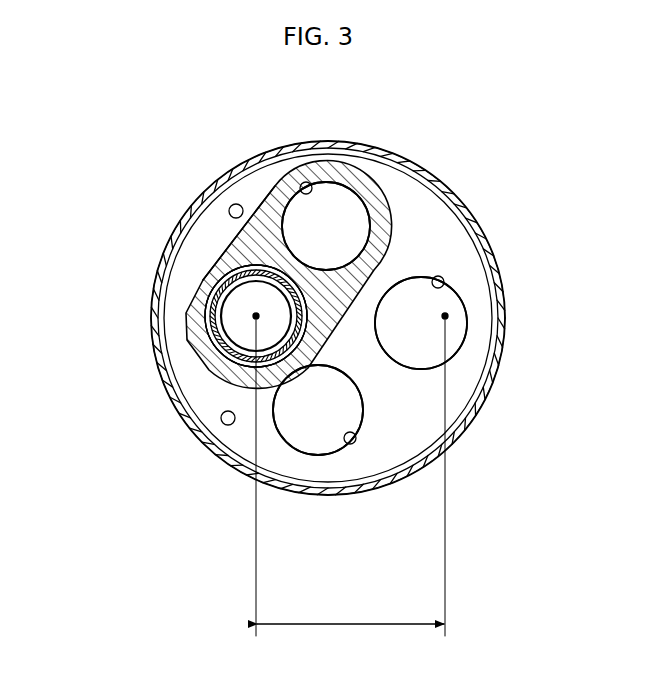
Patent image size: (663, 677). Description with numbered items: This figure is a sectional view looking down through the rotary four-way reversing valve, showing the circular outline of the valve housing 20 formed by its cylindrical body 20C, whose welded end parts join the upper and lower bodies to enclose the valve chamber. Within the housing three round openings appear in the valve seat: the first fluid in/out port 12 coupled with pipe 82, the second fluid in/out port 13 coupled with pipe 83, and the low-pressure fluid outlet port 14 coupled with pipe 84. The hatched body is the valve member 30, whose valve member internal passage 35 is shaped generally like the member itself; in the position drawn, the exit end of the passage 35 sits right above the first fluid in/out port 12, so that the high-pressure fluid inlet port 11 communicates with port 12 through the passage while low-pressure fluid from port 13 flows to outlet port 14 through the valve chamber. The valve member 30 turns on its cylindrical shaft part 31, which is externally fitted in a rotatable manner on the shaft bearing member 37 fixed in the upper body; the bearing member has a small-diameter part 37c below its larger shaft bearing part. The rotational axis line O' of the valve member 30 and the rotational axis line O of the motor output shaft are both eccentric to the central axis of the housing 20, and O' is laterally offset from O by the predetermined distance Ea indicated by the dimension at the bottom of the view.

The valve housing 20 is at (222, 172).
The cylindrical body 20C is at (447, 190).
The first fluid in/out port 12 is at (300, 186).
The pipe 82 is at (326, 177).
The second fluid in/out port 13 is at (344, 444).
The pipe 83 is at (356, 463).
The low-pressure fluid outlet port 14 is at (449, 287).
The pipe 84 is at (484, 310).
The valve member 30 is at (215, 258).
The valve member internal passage 35 is at (229, 246).
The high-pressure fluid inlet port 11 is at (256, 316).
The cylindrical shaft part 31 is at (212, 335).
The shaft bearing member 37 is at (217, 372).
The small-diameter part 37c is at (216, 373).
The rotational axis line of the output shaft O is at (494, 354).
The rotational axis line of the valve member O' is at (162, 326).
The predetermined distance Ea is at (350, 478).